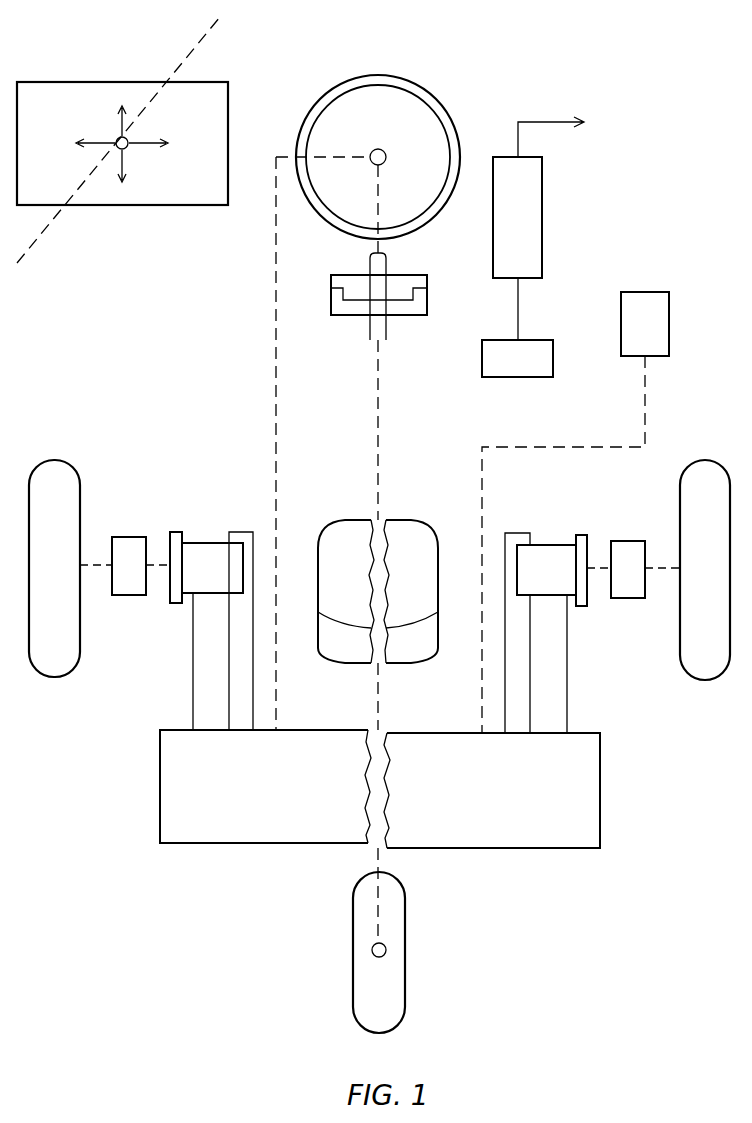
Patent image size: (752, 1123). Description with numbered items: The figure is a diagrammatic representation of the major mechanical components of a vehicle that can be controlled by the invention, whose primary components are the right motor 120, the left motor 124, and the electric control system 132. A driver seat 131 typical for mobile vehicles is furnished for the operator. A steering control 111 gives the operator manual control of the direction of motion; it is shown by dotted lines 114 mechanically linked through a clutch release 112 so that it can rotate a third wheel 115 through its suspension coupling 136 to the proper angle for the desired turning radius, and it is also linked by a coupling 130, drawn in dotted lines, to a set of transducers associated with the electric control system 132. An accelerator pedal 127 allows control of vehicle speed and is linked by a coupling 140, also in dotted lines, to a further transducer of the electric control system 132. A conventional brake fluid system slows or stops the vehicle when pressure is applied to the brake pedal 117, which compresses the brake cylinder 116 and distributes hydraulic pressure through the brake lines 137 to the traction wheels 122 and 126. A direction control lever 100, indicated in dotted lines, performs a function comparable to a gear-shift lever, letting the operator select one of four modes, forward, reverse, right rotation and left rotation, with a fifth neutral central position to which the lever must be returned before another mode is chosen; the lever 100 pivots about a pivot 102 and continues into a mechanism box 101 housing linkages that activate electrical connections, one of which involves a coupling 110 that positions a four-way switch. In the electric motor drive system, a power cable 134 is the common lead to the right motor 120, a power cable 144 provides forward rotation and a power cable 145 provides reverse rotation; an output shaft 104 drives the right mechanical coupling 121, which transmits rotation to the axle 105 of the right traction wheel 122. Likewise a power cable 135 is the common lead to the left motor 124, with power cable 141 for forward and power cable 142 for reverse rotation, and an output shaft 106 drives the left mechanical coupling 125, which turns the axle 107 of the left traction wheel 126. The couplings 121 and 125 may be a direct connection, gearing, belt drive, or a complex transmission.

The direction control lever 100 is at (45, 262).
The mechanism box 101 is at (215, 82).
The pivot 102 is at (127, 148).
The output shaft 104 is at (603, 570).
The axle 105 is at (652, 570).
The output shaft 106 is at (163, 566).
The axle 107 is at (100, 566).
The coupling 110 is at (215, 22).
The steering control 111 is at (432, 98).
The clutch release 112 is at (418, 275).
The dotted lines 114 is at (378, 425).
The third wheel 115 is at (404, 893).
The brake cylinder 116 is at (542, 160).
The brake pedal 117 is at (545, 340).
The right motor 120 is at (584, 535).
The right mechanical coupling 121 is at (628, 569).
The right traction wheel 122 is at (705, 570).
The left motor 124 is at (182, 530).
The left mechanical coupling 125 is at (129, 566).
The left traction wheel 126 is at (54, 568).
The accelerator pedal 127 is at (667, 292).
The coupling 130 is at (366, 156).
The driver seat 131 is at (414, 531).
The electric control system 132 is at (380, 789).
The power cable 134 is at (568, 685).
The power cable 135 is at (193, 690).
The suspension coupling 136 is at (386, 948).
The brake lines 137 is at (536, 122).
The coupling 140 is at (645, 422).
The power cable 141 is at (243, 530).
The power cable 142 is at (229, 650).
The power cable 144 is at (519, 533).
The power cable 145 is at (530, 660).